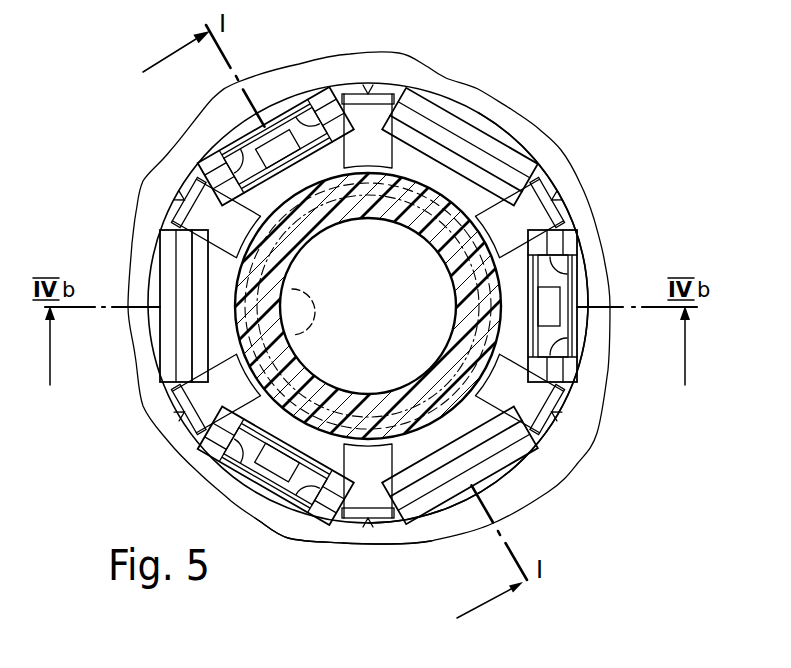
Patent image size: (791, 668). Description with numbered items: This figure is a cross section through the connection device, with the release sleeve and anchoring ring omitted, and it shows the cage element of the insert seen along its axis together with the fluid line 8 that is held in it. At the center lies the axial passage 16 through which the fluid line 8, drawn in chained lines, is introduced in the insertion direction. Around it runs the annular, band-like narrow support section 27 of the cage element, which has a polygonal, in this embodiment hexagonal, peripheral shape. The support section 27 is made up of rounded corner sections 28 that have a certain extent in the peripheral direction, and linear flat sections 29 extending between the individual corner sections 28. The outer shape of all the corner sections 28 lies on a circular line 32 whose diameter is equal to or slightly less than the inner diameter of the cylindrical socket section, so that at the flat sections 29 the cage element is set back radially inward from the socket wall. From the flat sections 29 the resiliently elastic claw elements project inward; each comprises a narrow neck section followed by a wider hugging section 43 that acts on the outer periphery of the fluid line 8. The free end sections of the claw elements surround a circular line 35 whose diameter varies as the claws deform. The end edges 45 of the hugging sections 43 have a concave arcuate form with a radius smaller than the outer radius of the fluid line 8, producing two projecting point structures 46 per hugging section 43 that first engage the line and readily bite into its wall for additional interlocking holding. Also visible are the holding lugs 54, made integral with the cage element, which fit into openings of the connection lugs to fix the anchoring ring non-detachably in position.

The fluid line 8 is at (540, 189).
The axial passage 16 is at (358, 483).
The support section 27 is at (165, 210).
The corner sections 28 is at (392, 53).
The flat sections 29 is at (273, 112).
The circular line 32 is at (389, 545).
The circular line 35 is at (546, 440).
The hugging section 43 is at (408, 160).
The end edges 45 is at (230, 404).
The point structures 46 is at (264, 265).
The holding lugs 54 is at (285, 143).